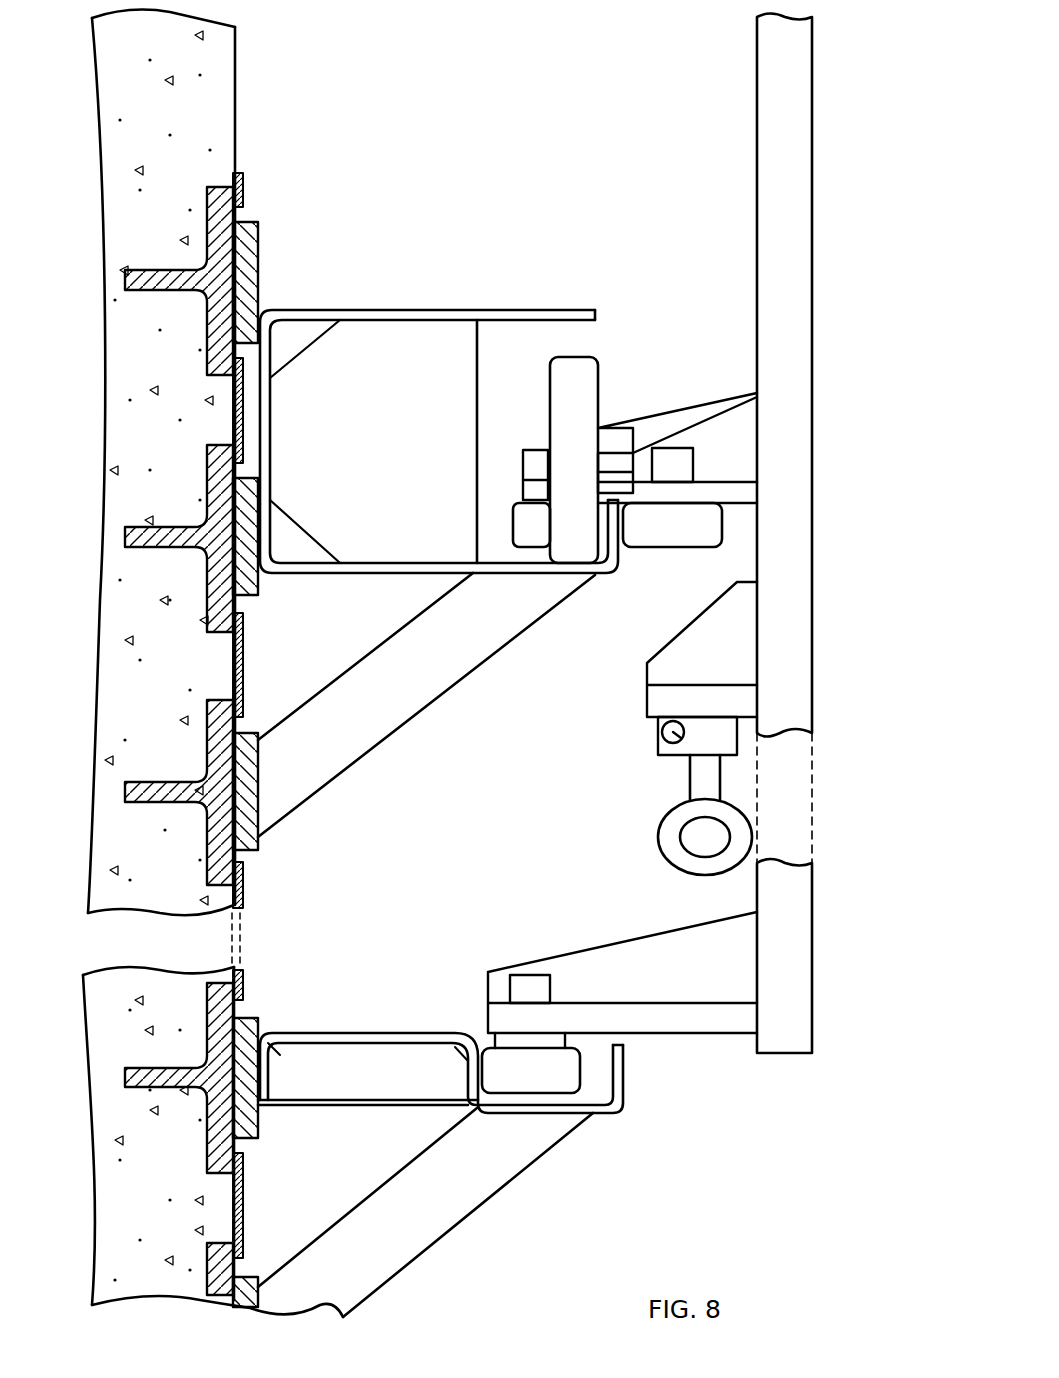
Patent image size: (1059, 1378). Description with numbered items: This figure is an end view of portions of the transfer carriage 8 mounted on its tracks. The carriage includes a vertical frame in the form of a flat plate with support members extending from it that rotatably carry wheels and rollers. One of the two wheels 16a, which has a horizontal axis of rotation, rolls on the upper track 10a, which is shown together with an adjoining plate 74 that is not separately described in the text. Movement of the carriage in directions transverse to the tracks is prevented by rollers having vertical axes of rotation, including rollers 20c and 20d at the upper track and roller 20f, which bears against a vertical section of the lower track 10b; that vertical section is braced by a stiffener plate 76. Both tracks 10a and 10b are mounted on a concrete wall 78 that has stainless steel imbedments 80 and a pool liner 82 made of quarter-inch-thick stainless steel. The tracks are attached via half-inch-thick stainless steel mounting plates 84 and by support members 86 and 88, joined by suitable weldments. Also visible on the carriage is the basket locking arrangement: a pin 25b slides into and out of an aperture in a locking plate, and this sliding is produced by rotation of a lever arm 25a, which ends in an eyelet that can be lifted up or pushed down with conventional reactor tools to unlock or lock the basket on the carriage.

The transfer carriage 8 is at (818, 430).
The upper track 10a is at (615, 590).
The track 10b is at (620, 1115).
The wheel 16a is at (600, 362).
The roller 20c is at (513, 527).
The roller 20d is at (690, 547).
The roller 20f is at (605, 1068).
The lever arm 25a is at (667, 830).
The pin 25b is at (664, 727).
The upper plate 74 is at (485, 343).
The stiffener plate 76 is at (395, 1108).
The concrete wall 78 is at (240, 88).
The stainless steel imbedments 80 is at (180, 270).
The pool liner 82 is at (241, 662).
The mounting plates 84 is at (250, 222).
The support member 86 is at (408, 720).
The support member 88 is at (490, 1200).